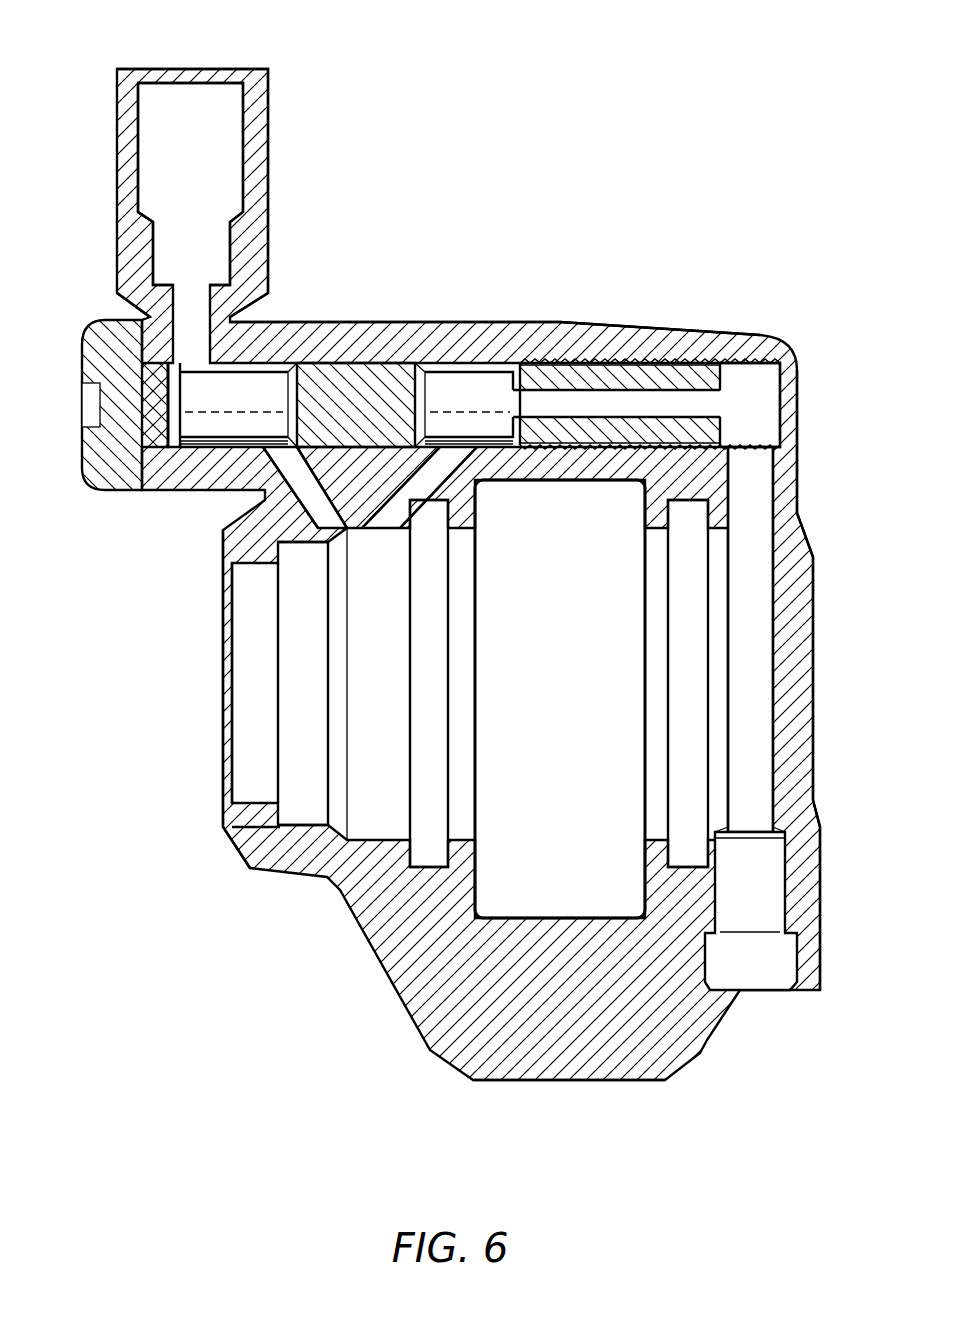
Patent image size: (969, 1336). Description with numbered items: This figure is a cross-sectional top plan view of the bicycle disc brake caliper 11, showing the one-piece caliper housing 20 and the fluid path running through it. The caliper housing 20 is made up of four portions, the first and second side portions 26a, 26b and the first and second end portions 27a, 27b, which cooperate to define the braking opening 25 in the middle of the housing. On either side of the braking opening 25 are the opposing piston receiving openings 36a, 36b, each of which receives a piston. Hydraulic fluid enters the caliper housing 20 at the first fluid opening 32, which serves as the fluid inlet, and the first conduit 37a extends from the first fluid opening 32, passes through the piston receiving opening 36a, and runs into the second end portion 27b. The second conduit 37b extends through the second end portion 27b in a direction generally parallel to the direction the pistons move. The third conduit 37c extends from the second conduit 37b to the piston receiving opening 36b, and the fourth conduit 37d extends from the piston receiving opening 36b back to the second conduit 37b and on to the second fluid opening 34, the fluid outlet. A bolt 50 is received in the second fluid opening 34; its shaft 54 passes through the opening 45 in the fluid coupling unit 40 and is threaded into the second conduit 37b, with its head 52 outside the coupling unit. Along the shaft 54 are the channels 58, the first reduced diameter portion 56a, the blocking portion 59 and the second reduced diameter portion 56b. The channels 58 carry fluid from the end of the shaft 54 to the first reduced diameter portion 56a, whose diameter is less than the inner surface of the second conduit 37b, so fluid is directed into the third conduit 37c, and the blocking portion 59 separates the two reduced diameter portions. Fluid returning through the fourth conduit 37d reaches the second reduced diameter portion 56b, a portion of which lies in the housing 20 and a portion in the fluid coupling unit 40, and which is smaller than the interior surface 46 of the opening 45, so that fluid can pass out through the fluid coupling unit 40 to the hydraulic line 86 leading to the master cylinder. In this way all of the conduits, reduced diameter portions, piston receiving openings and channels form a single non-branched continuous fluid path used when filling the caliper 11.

The bicycle disc brake caliper 11 is at (624, 158).
The caliper housing 20 is at (426, 1027).
The braking opening 25 is at (560, 699).
The first side portion 26a is at (790, 773).
The second side portion 26b is at (250, 825).
The first end portion 27a is at (560, 1080).
The second end portion 27b is at (575, 335).
The first fluid opening 32 is at (755, 985).
The second fluid opening 34 is at (260, 360).
The piston receiving opening 36a is at (695, 677).
The piston receiving opening 36b is at (300, 685).
The first conduit 37a is at (757, 540).
The second conduit 37b is at (750, 380).
The third conduit 37c is at (400, 490).
The fourth conduit 37d is at (305, 507).
The fluid coupling unit 40 is at (150, 470).
The opening 45 is at (218, 440).
The interior surface 46 is at (175, 445).
The bolt 50 is at (72, 405).
The head 52 is at (105, 345).
The shaft 54 is at (660, 375).
The first reduced diameter portion 56a is at (469, 404).
The second reduced diameter portion 56b is at (234, 404).
The channels 58 is at (610, 405).
The blocking portion 59 is at (365, 375).
The hydraulic line 86 is at (193, 93).